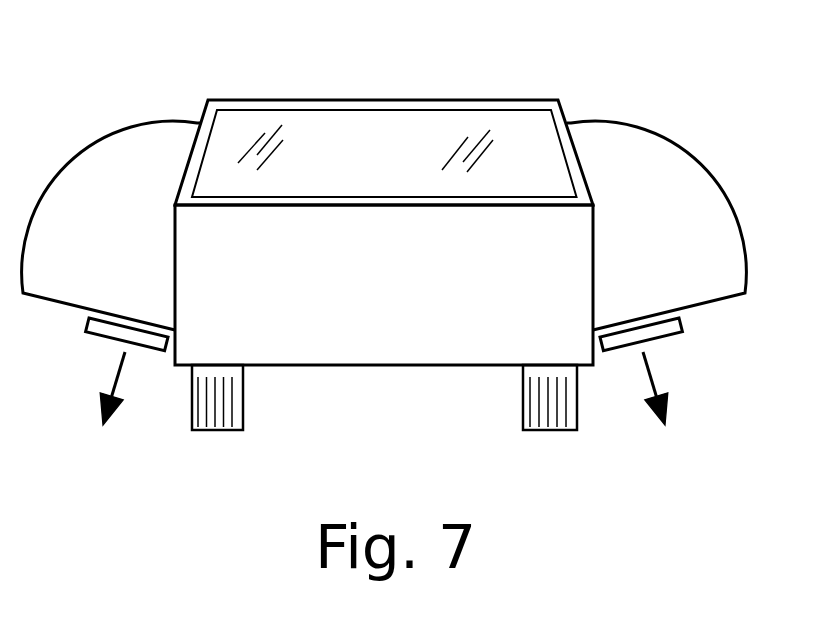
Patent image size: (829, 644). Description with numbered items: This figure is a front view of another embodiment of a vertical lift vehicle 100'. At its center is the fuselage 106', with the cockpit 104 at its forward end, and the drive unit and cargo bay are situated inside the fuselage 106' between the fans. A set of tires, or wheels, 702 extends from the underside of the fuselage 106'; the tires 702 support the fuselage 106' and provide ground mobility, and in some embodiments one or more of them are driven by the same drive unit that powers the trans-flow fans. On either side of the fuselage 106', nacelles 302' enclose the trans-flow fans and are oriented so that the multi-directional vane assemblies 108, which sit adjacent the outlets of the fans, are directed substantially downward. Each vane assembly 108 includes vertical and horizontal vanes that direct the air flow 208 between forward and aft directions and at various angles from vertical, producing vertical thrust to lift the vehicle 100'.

The vertical lift vehicle 100' is at (384, 246).
The cockpit 104 is at (353, 100).
The fuselage 106' is at (384, 323).
The nacelle 302' is at (384, 208).
The multi-directional vane assembly 108 is at (112, 318).
The air flow 208 is at (113, 377).
The tire 702 is at (223, 432).